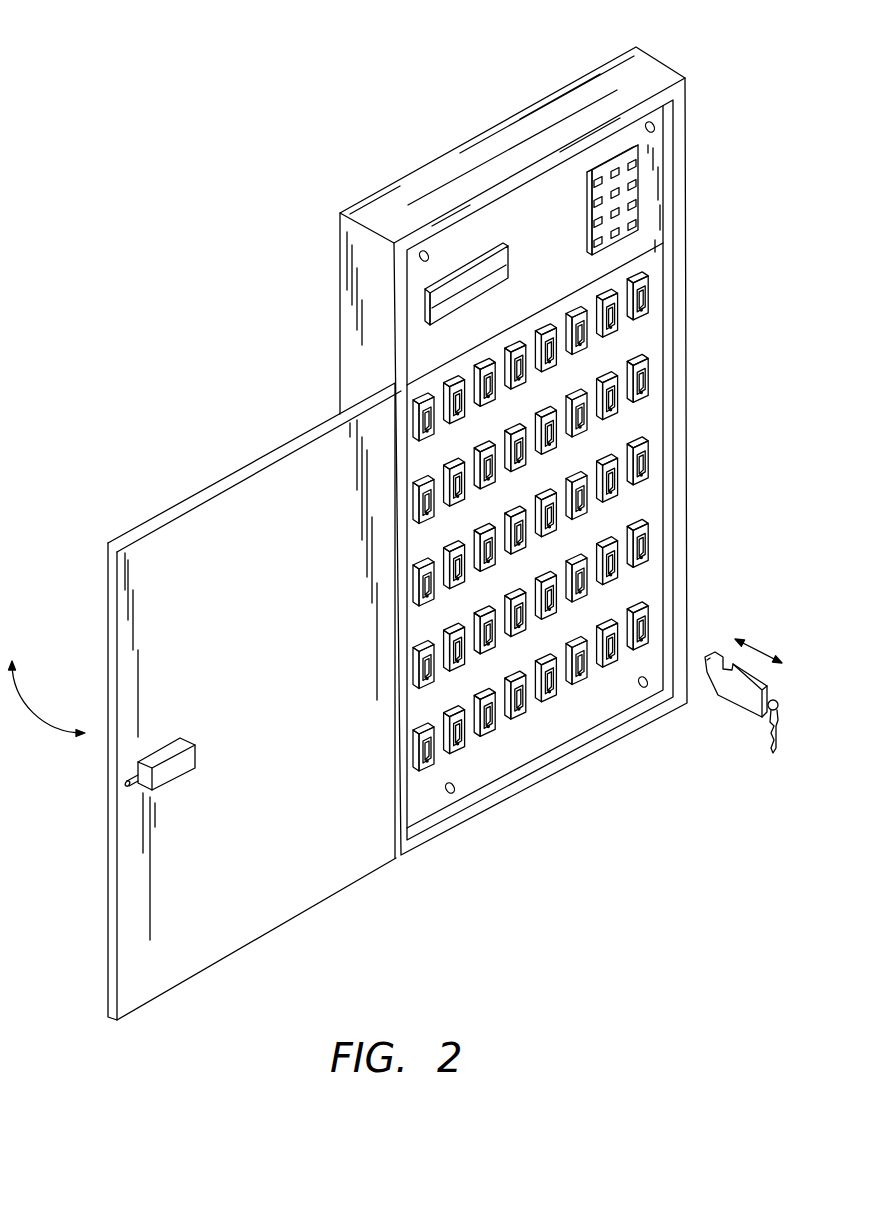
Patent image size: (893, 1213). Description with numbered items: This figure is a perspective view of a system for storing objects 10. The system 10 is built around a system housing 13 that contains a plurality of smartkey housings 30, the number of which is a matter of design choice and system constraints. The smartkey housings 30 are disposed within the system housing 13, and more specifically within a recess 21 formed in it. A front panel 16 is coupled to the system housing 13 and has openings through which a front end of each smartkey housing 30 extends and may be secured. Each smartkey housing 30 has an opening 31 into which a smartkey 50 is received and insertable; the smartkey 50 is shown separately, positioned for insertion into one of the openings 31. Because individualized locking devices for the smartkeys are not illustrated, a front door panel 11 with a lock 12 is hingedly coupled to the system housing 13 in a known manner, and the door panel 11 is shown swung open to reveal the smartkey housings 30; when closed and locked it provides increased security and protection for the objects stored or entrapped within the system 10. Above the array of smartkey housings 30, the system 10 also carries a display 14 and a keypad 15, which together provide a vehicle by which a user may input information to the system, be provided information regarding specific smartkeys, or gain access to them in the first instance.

The system for storing objects 10 is at (298, 368).
The front door panel 11 is at (135, 938).
The lock 12 is at (172, 783).
The system housing 13 is at (677, 477).
The display 14 is at (482, 268).
The keypad 15 is at (618, 157).
The front panel 16 is at (617, 680).
The recess 21 is at (517, 737).
The smartkey housings 30 is at (618, 332).
The opening 31 is at (641, 642).
The smartkey 50 is at (738, 716).